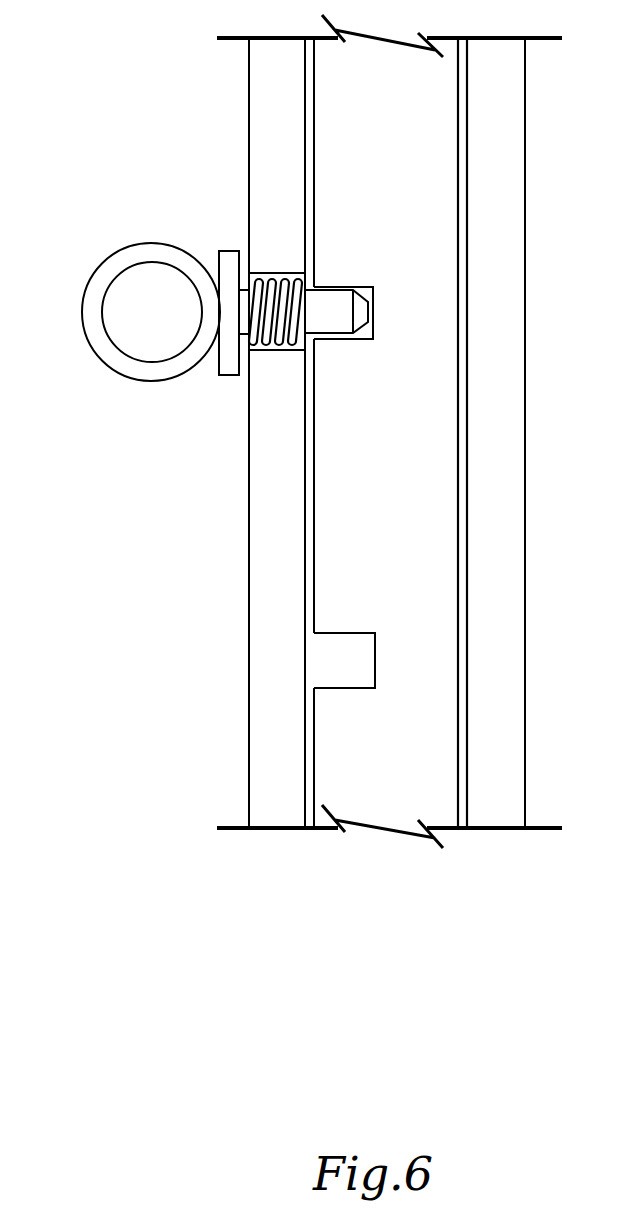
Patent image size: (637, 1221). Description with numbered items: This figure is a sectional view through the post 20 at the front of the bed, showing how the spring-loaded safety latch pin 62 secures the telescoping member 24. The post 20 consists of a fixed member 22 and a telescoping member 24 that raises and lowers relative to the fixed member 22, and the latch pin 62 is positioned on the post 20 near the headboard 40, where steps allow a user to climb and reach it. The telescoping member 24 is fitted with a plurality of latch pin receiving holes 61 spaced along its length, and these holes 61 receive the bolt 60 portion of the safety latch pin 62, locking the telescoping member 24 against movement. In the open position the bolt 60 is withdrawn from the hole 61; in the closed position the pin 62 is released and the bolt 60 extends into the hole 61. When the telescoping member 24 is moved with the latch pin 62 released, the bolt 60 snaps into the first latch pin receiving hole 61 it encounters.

The post 20 is at (510, 218).
The fixed member 22 is at (510, 333).
The telescoping member 24 is at (430, 102).
The headboard 40 is at (215, 265).
The bolt 60 is at (325, 300).
The latch pin receiving hole 61 is at (370, 290).
The safety latch pin 62 is at (112, 263).